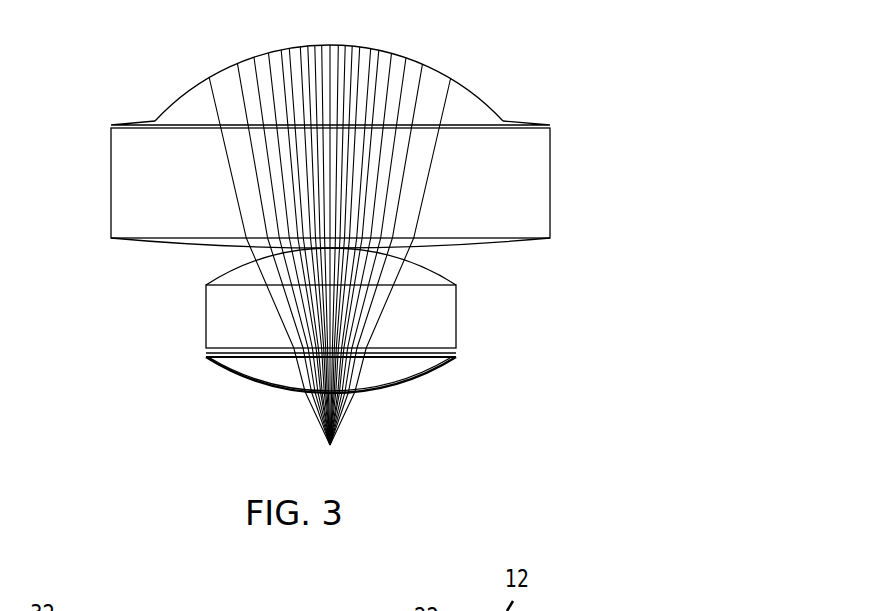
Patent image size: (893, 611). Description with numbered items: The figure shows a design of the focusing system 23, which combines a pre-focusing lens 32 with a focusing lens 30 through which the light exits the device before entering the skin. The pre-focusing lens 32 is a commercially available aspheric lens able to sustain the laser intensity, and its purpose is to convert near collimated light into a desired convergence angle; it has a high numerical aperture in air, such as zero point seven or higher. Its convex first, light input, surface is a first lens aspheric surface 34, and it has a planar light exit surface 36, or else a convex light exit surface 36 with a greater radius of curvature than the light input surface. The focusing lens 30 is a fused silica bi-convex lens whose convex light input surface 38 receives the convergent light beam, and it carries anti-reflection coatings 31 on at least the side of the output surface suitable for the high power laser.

The focusing system 23 is at (116, 79).
The focusing lens 30 is at (487, 348).
The anti-reflection coatings 31 is at (423, 368).
The pre-focusing lens 32 is at (570, 151).
The first lens aspheric surface 34 is at (462, 89).
The light exit surface 36 is at (162, 238).
The convex light input surface 38 is at (440, 265).